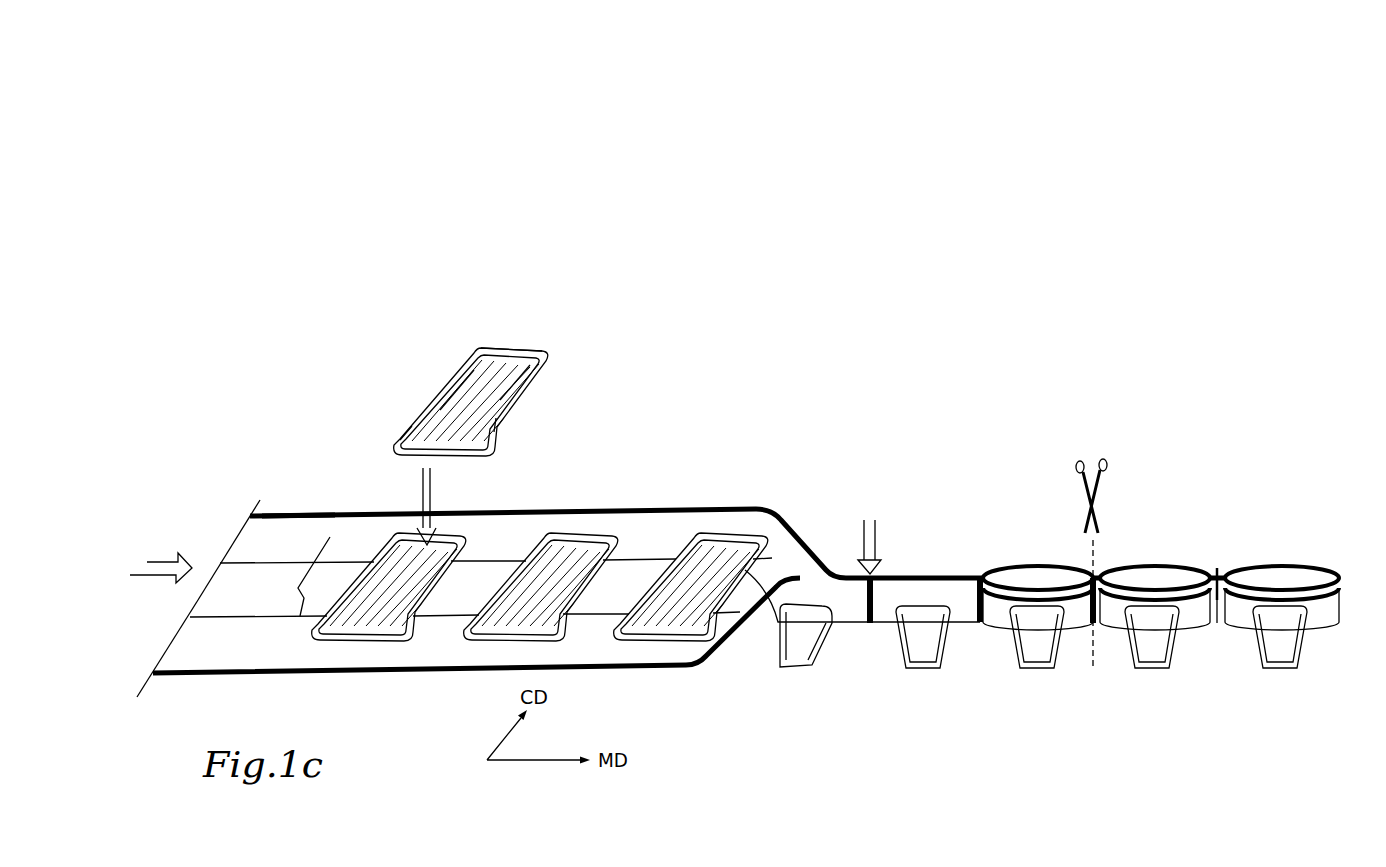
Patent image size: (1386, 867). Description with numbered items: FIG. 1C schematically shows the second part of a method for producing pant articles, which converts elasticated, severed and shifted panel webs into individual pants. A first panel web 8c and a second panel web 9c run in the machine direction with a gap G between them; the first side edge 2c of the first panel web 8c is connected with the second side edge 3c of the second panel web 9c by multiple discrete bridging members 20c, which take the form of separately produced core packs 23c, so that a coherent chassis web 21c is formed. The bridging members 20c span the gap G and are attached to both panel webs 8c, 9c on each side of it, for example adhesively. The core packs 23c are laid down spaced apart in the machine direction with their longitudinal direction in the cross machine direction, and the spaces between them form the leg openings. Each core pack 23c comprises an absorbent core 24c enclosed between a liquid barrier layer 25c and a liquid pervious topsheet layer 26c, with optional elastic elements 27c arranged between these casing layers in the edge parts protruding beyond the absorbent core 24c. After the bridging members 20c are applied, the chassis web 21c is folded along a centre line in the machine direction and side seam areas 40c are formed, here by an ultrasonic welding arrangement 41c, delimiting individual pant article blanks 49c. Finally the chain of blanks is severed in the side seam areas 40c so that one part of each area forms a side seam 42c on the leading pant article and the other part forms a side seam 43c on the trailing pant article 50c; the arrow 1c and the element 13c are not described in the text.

The process / machine direction arrow 1c is at (161, 555).
The first side edge 2c is at (220, 565).
The second side edge 3c is at (197, 604).
The first panel web 8c is at (292, 535).
The second panel web 9c is at (305, 653).
The folded absorbent article 13c is at (888, 628).
The bridging member 20c is at (518, 277).
The chassis web 21c is at (323, 487).
The core pack 23c is at (537, 570).
The absorbent core 24c is at (515, 346).
The liquid barrier layer 25c is at (450, 385).
The liquid pervious topsheet layer 26c is at (508, 380).
The elastic elements 27c is at (430, 415).
The side seam area 40c is at (880, 590).
The ultrasonic welding arrangement 41c is at (860, 548).
The side seam 42c is at (1216, 578).
The side seam 43c is at (1217, 615).
The pant article blank 49c is at (1040, 578).
The pant article 50c is at (1146, 545).
The gap G is at (309, 576).